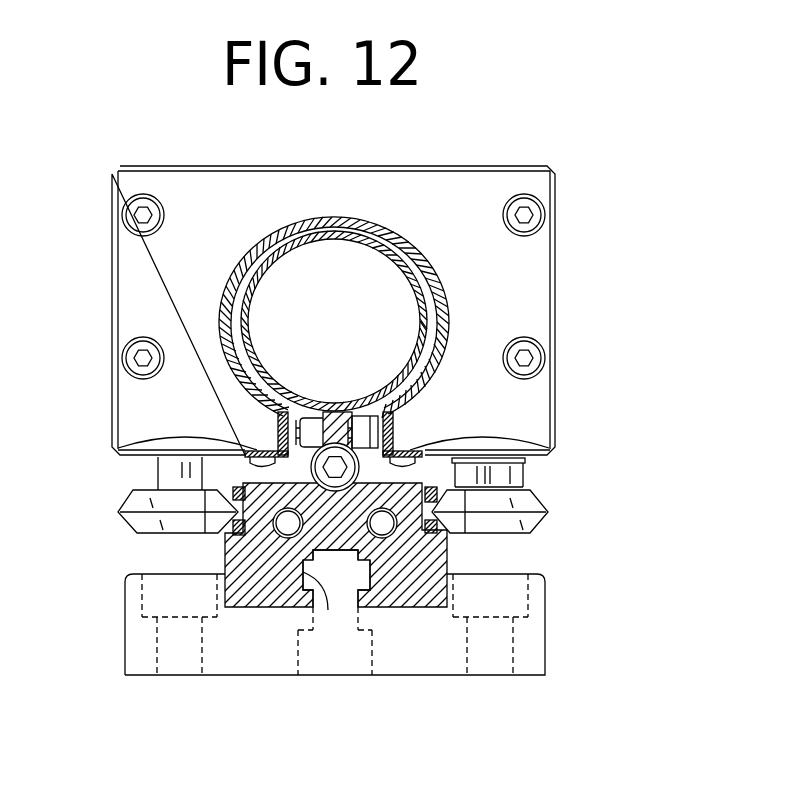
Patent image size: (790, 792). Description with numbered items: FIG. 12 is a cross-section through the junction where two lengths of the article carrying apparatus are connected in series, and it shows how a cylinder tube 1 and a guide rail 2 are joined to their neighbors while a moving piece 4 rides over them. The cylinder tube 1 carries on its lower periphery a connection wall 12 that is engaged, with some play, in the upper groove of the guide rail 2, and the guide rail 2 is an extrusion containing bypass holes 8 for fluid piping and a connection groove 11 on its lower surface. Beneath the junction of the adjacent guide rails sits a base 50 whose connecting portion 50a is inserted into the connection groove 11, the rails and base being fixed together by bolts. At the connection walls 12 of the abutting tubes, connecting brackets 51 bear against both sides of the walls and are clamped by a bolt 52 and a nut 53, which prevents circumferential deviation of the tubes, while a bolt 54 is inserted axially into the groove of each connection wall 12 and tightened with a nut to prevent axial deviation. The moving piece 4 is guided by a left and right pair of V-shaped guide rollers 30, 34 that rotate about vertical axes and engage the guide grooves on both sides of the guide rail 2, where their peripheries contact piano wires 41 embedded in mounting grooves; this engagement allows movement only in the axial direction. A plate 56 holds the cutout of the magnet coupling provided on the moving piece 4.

The cylinder tube 1 is at (336, 216).
The guide rail 2 is at (268, 600).
The moving piece 4 is at (429, 167).
The bypass hole 8 is at (288, 524).
The connection groove 11 is at (305, 571).
The connection wall 12 is at (335, 408).
The guide roller 30 is at (122, 512).
The guide roller 34 is at (548, 514).
The piano wire 41 is at (238, 533).
The base 50 is at (447, 668).
The connecting portion 50a is at (337, 574).
The connecting bracket 51 is at (317, 415).
The bolt 52 is at (278, 418).
The nut 53 is at (392, 424).
The bolt 54 is at (338, 470).
The plate 56 is at (118, 449).